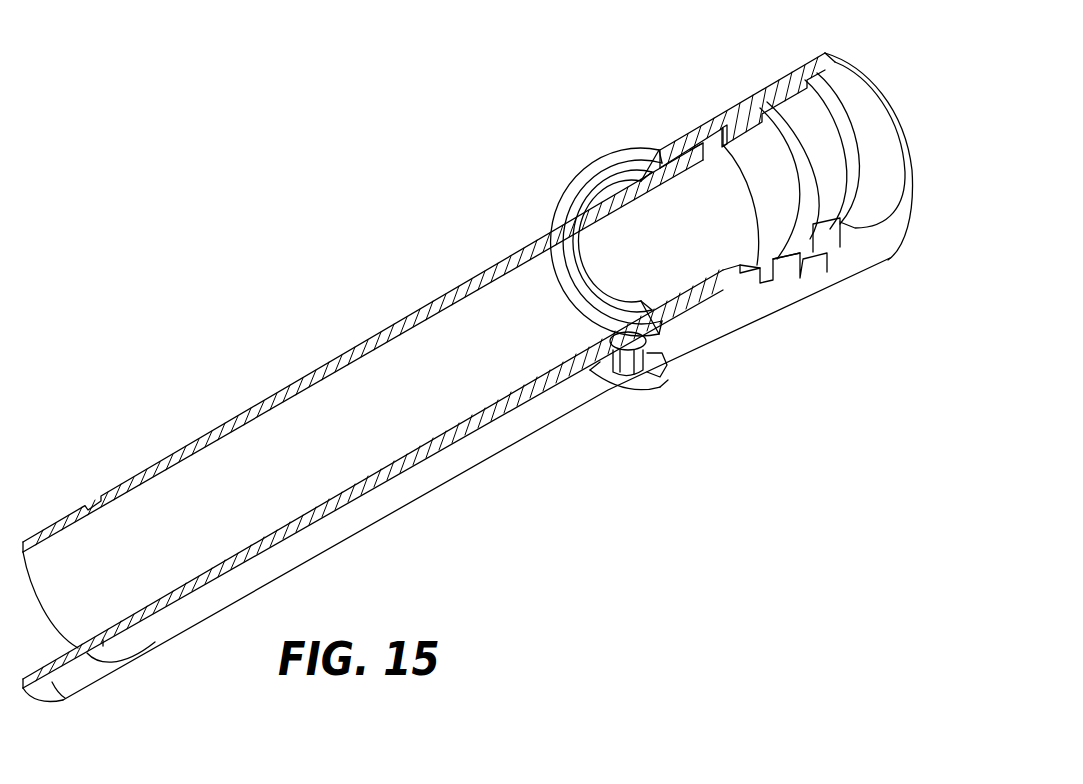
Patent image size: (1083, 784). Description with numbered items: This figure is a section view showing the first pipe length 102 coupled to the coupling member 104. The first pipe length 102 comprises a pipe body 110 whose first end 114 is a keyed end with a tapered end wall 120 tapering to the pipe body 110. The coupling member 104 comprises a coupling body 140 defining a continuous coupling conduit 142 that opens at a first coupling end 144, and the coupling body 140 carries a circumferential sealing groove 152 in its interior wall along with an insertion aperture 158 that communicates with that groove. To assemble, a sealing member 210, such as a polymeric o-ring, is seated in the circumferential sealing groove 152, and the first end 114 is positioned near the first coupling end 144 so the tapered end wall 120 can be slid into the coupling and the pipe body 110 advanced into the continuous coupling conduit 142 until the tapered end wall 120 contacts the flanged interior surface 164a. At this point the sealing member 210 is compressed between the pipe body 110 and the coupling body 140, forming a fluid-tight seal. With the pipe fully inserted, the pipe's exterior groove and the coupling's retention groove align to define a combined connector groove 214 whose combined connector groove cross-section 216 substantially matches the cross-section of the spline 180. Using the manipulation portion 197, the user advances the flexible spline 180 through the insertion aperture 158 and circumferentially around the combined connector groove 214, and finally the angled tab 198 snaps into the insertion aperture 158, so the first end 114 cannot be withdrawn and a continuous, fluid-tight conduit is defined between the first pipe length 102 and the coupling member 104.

The first pipe length 102 is at (185, 448).
The pipe body 110 is at (364, 345).
The coupling member 104 is at (797, 303).
The coupling body 140 is at (760, 318).
The continuous coupling conduit 142 is at (848, 100).
The first end 114 is at (713, 300).
The circumferential sealing groove 152 is at (690, 307).
The insertion aperture 158 is at (627, 362).
The flanged interior surface 164a is at (738, 140).
The tapered end wall 120 is at (700, 142).
The spline 180 is at (553, 220).
The sealing member 210 is at (625, 148).
The combined connector groove 214 is at (575, 195).
The combined connector groove cross-section 216 is at (690, 145).
The first coupling end 144 is at (595, 378).
The manipulation portion 197 is at (624, 365).
The angled tab 198 is at (619, 362).